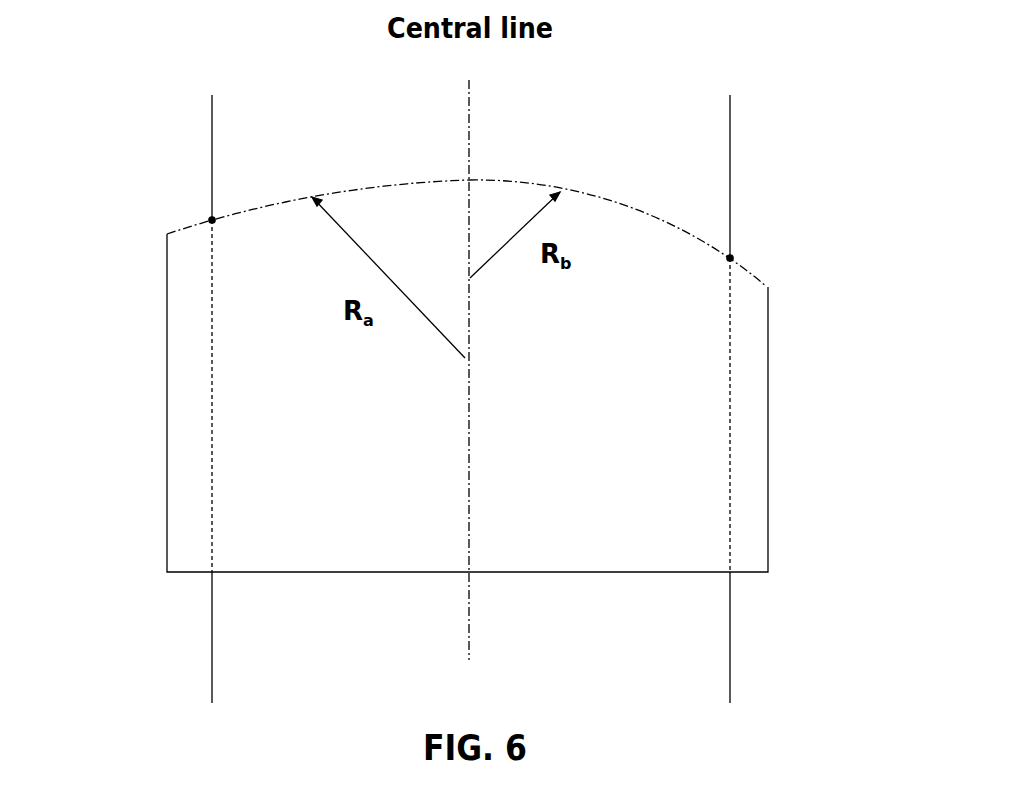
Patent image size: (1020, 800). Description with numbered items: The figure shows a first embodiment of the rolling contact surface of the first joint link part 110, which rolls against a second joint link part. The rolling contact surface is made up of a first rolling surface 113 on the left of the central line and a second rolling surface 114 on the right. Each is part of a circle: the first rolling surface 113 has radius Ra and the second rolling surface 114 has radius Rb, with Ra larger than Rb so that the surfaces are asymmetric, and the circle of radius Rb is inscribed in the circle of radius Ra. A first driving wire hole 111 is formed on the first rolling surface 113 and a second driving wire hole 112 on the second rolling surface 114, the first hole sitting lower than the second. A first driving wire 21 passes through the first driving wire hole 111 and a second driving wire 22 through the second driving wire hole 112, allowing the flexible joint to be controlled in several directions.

The first joint link part 110 is at (768, 408).
The first driving wire hole 111 is at (212, 220).
The second driving wire hole 112 is at (730, 258).
The first rolling surface 113 is at (385, 185).
The second rolling surface 114 is at (590, 196).
The first driving wire 21 is at (210, 420).
The second driving wire 22 is at (730, 503).